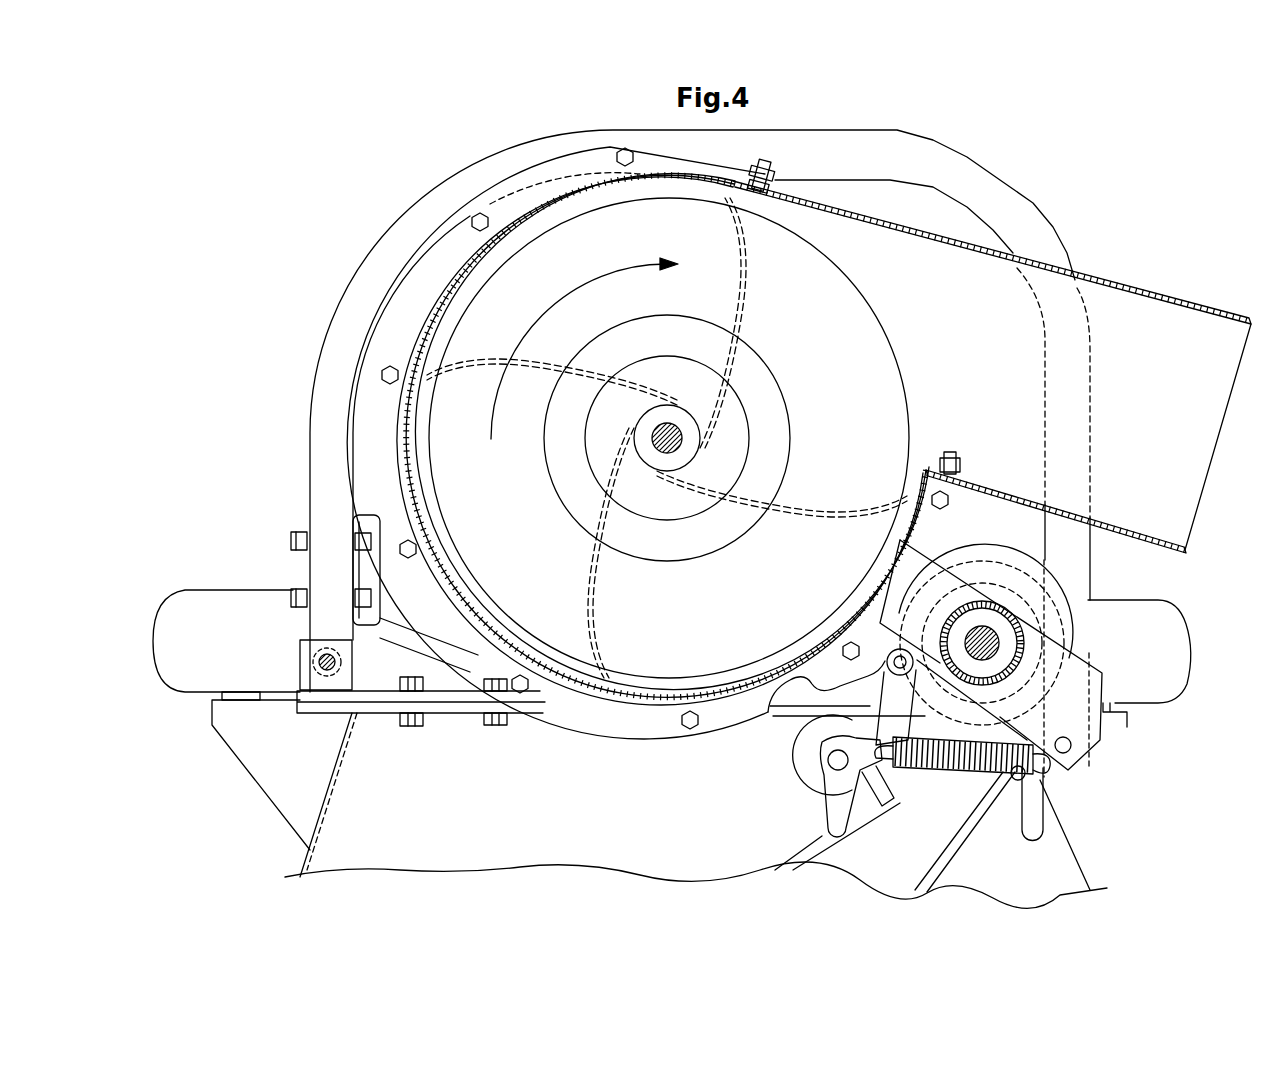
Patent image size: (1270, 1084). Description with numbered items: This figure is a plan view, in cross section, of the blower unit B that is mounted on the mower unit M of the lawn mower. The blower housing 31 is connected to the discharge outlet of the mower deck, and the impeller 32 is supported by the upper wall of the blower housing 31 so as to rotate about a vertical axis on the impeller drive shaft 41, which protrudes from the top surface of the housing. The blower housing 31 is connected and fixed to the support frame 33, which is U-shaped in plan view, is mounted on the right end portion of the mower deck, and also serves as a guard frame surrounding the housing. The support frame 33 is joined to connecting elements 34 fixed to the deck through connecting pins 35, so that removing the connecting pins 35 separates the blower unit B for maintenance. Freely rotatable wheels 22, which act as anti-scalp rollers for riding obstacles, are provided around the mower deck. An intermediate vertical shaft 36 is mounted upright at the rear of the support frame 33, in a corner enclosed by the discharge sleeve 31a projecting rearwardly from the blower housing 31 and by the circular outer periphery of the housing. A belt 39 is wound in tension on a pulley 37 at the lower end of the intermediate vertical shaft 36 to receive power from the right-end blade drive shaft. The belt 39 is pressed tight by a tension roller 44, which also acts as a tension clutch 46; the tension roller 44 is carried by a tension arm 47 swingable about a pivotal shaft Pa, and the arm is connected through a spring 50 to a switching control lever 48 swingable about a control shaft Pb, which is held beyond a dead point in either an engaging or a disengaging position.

The freely rotatable wheels 22 is at (232, 590).
The blower housing 31 is at (463, 273).
The discharge sleeve 31a is at (1130, 280).
The impeller 32 is at (902, 388).
The support frame 33 is at (343, 311).
The connecting elements 34 is at (303, 673).
The connecting pins 35 is at (313, 657).
The intermediate vertical shaft 36 is at (988, 630).
The pulley 37 is at (1063, 605).
The belt 39 is at (952, 847).
The impeller drive shaft 41 is at (680, 430).
The tension roller 44 is at (800, 767).
The tension clutch 46 is at (878, 786).
The tension arm 47 is at (823, 800).
The switching control lever 48 is at (1033, 820).
The spring 50 is at (937, 780).
The blower unit B is at (398, 434).
The mower unit M is at (305, 853).
The pivotal shaft Pa is at (892, 664).
The control shaft Pb is at (1020, 790).